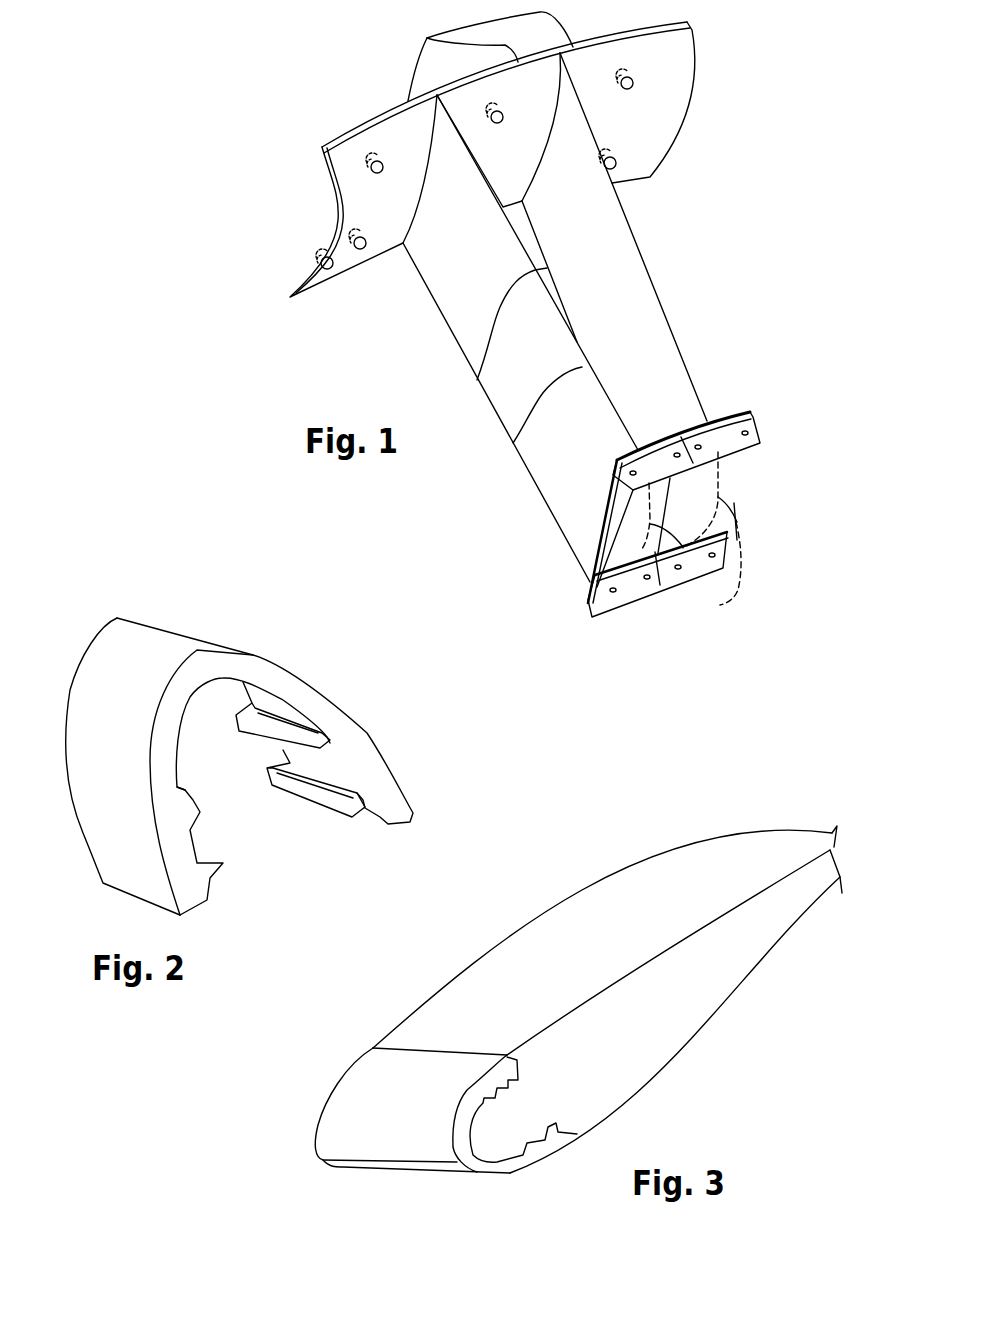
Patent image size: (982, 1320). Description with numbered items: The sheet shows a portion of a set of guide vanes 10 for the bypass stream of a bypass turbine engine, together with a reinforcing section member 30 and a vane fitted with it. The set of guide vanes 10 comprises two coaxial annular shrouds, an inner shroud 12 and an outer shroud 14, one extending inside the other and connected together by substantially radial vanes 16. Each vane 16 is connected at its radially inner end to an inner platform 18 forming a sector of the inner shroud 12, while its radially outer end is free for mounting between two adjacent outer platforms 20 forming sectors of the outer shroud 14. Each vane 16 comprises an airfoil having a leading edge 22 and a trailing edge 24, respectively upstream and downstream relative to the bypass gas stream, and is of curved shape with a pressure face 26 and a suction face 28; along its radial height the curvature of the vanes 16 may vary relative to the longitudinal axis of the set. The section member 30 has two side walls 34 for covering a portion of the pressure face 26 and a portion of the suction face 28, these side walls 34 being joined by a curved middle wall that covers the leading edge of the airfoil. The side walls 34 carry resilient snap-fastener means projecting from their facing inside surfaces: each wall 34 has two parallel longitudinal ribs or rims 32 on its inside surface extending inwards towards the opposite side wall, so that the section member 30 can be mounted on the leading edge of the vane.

In FIG. 1, the set of guide vanes 10 is at (722, 159).
In FIG. 1, the inner shroud 12 is at (690, 590).
In FIG. 1, the outer shroud 14 is at (350, 128).
In FIG. 1, the vane 16 is at (657, 288).
In FIG. 3, the vane 16 is at (682, 1085).
In FIG. 1, the inner platform 18 is at (634, 592).
In FIG. 1, the outer platform 20 is at (486, 56).
In FIG. 1, the leading edge 22 is at (679, 361).
In FIG. 1, the trailing edge 24 is at (477, 380).
In FIG. 1, the pressure face 26 is at (580, 232).
In FIG. 3, the pressure face 26 is at (673, 1008).
In FIG. 1, the suction face 28 is at (683, 548).
In FIG. 3, the suction face 28 is at (545, 955).
In FIG. 2, the section member 30 is at (125, 590).
In FIG. 3, the section member 30 is at (365, 1190).
In FIG. 2, the longitudinal rib 32 is at (310, 752).
In FIG. 2, the side wall 34 is at (320, 693).